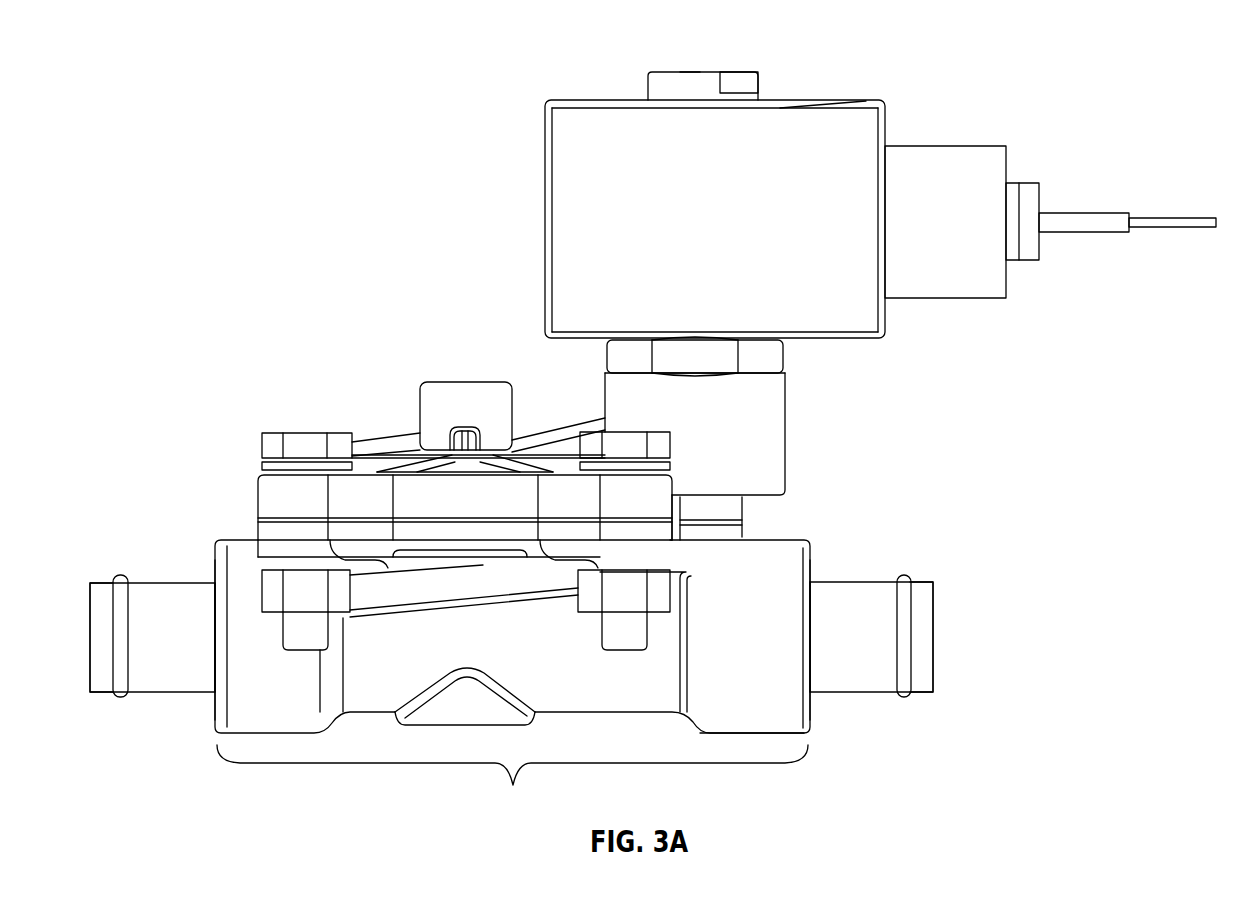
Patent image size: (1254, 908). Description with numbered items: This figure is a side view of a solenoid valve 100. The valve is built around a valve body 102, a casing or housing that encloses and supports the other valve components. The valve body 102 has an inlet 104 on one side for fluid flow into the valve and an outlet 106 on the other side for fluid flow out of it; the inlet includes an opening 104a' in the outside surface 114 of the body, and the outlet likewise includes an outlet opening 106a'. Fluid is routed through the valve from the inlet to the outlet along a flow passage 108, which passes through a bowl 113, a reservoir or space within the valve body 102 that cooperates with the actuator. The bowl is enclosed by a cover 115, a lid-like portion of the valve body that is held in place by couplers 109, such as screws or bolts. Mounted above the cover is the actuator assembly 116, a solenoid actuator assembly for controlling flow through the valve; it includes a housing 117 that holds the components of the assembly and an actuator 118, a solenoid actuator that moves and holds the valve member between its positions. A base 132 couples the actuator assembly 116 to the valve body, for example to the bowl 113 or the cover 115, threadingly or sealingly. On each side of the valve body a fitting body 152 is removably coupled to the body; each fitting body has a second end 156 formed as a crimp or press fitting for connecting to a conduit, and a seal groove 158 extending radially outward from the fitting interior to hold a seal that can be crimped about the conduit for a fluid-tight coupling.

The solenoid valve 100 is at (226, 50).
The valve body 102 is at (612, 712).
The inlet 104 is at (233, 535).
The inlet opening in outside surface 104a' is at (165, 609).
The outlet 106 is at (795, 540).
The outlet opening 106a' is at (864, 619).
The flow passage 108 is at (512, 782).
The couplers 109 is at (300, 433).
The bowl 113 is at (452, 538).
The outside surface 114 is at (772, 605).
The cover 115 is at (363, 435).
The actuator assembly 116 is at (818, 72).
The housing 117 is at (862, 100).
The actuator 118 is at (660, 75).
The base 132 is at (786, 358).
The fitting body 152 is at (175, 693).
The second end 156 is at (103, 581).
The seal groove 158 is at (118, 699).